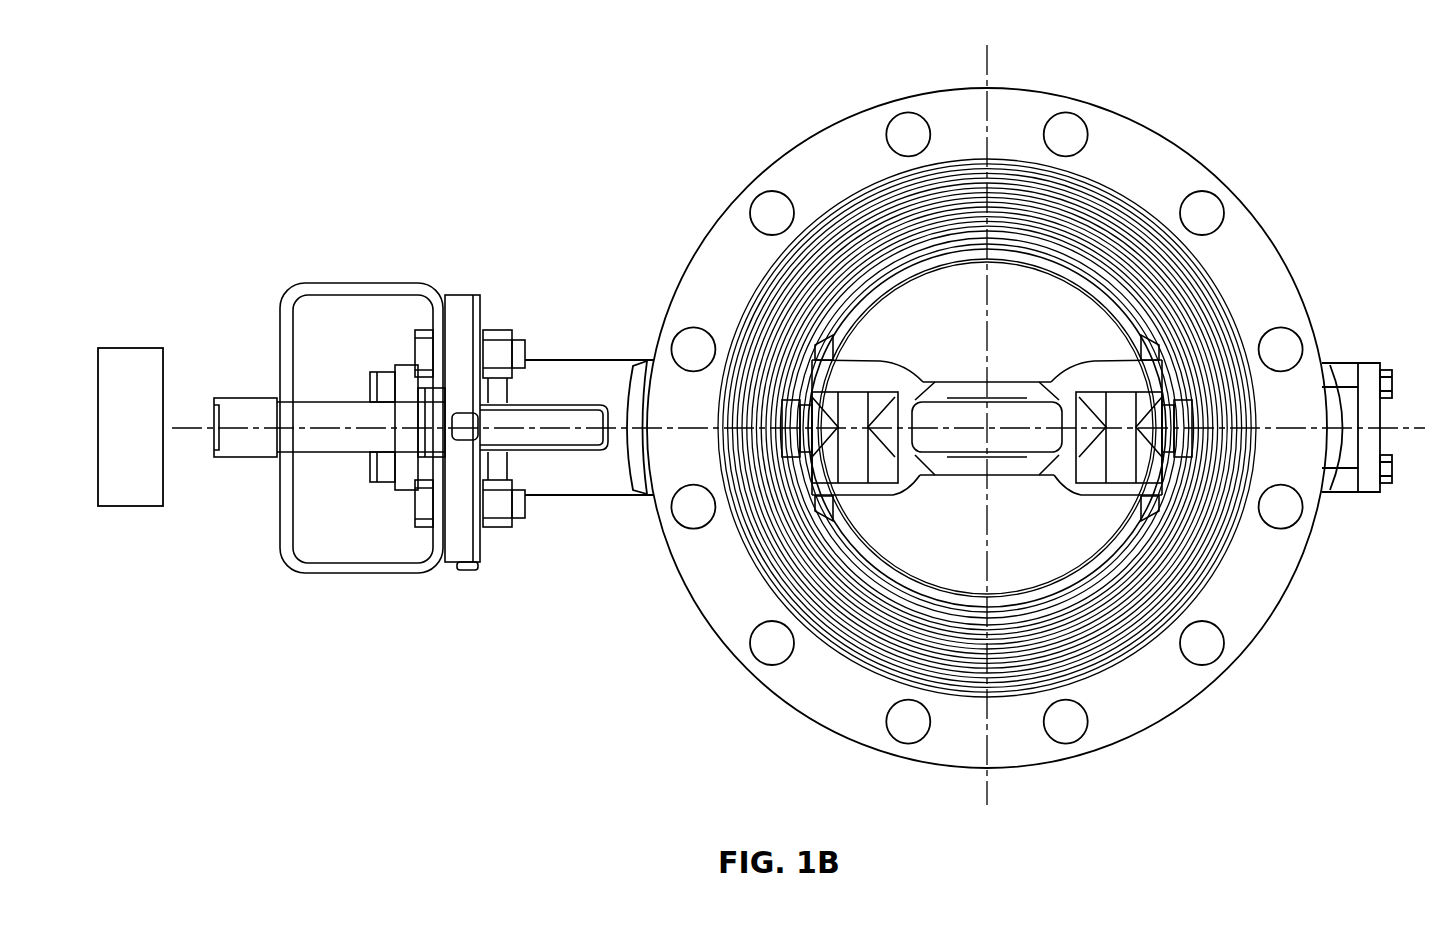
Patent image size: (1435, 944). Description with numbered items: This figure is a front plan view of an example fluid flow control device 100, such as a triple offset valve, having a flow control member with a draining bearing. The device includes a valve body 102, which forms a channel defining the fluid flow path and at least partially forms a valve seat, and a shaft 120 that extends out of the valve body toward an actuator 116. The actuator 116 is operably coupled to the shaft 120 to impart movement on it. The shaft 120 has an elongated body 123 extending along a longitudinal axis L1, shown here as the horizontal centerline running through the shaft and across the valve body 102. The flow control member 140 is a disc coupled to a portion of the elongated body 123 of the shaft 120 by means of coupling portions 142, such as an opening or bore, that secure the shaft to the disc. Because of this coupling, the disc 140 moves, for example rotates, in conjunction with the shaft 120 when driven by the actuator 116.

The fluid flow control device 100 is at (190, 100).
The valve body 102 is at (1165, 168).
The actuator 116 is at (132, 348).
The shaft 120 is at (313, 417).
The elongated body 123 is at (960, 440).
The flow control member 140 is at (1060, 559).
The coupling portion 142 is at (1125, 372).
The longitudinal axis L1 is at (1418, 428).